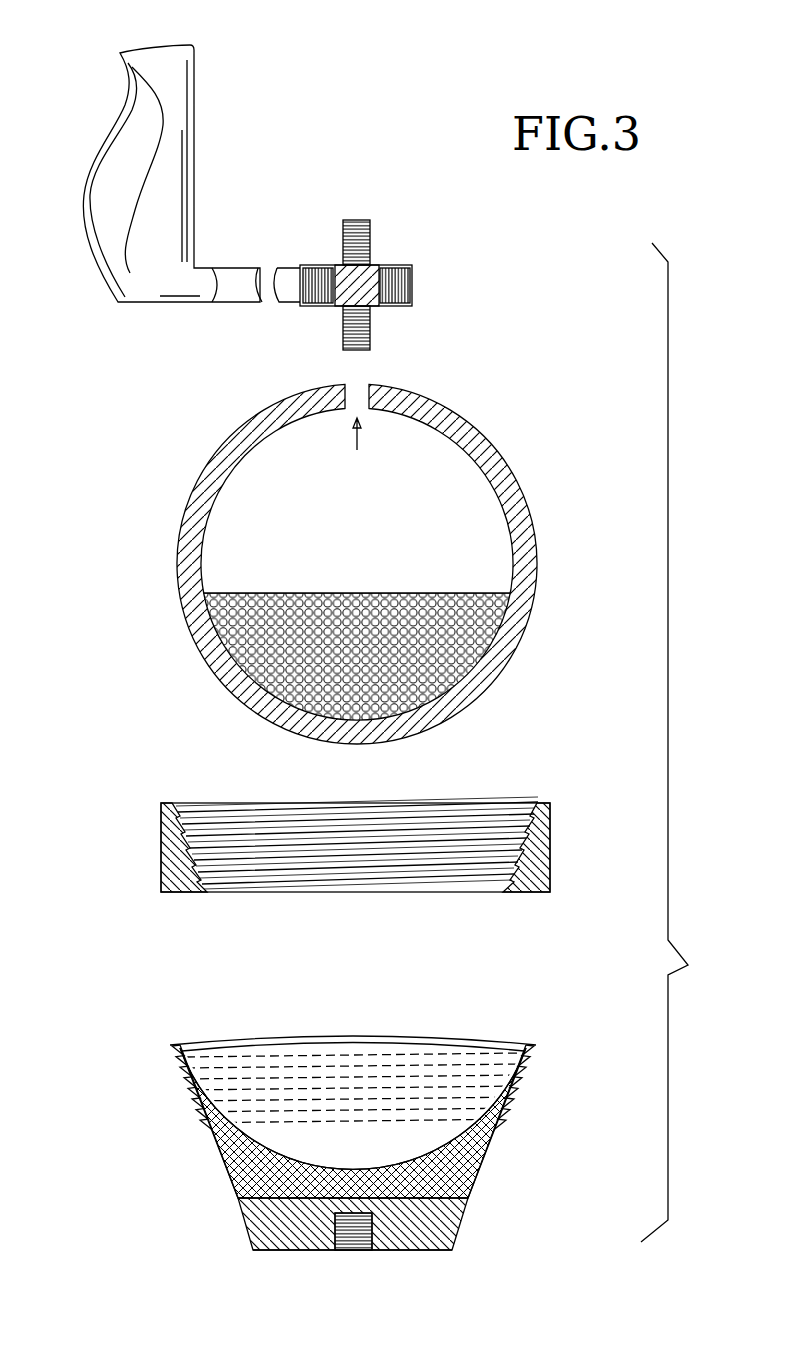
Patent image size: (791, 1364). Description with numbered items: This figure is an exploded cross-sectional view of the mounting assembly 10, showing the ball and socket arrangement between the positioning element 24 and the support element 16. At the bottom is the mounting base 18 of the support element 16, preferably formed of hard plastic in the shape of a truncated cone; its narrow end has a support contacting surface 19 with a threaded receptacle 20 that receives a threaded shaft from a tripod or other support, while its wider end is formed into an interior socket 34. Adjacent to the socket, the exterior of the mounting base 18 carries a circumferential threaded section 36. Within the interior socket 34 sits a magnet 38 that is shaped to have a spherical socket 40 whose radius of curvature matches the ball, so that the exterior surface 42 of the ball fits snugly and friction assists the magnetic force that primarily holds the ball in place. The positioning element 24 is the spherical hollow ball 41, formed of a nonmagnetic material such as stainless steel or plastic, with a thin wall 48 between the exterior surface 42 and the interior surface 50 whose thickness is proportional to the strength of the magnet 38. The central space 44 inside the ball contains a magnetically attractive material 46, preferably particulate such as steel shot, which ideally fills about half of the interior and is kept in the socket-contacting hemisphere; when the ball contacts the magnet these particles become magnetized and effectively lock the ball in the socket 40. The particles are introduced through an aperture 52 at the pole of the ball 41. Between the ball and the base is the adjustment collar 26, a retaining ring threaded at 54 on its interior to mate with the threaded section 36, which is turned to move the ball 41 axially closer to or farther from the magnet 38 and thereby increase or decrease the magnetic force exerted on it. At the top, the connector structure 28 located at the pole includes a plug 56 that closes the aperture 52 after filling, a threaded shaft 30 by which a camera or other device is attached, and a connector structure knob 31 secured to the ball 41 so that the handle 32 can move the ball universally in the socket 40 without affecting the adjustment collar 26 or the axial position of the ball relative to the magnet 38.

The mounting assembly 10 is at (684, 742).
The support element 16 is at (371, 1150).
The mounting base 18 is at (387, 1255).
The support contacting surface 19 is at (295, 1252).
The threaded receptacle 20 is at (353, 1240).
The positioning element 24 is at (362, 552).
The adjustment collar 26 is at (307, 882).
The connector structure 28 is at (277, 250).
The threaded shaft 30 is at (370, 243).
The connector structure knob 31 is at (412, 287).
The handle 32 is at (120, 105).
The interior socket 34 is at (465, 1162).
The circumferential threaded section 36 is at (383, 1067).
The magnet 38 is at (235, 1195).
The spherical socket 40 is at (330, 1167).
The hollow ball 41 is at (226, 693).
The exterior surface 42 is at (497, 455).
The central space 44 is at (318, 478).
The magnetically attractive material 46 is at (490, 645).
The wall 48 is at (530, 568).
The interior surface 50 is at (498, 522).
The aperture 52 is at (365, 385).
The internal threads 54 is at (240, 878).
The plug 56 is at (372, 325).